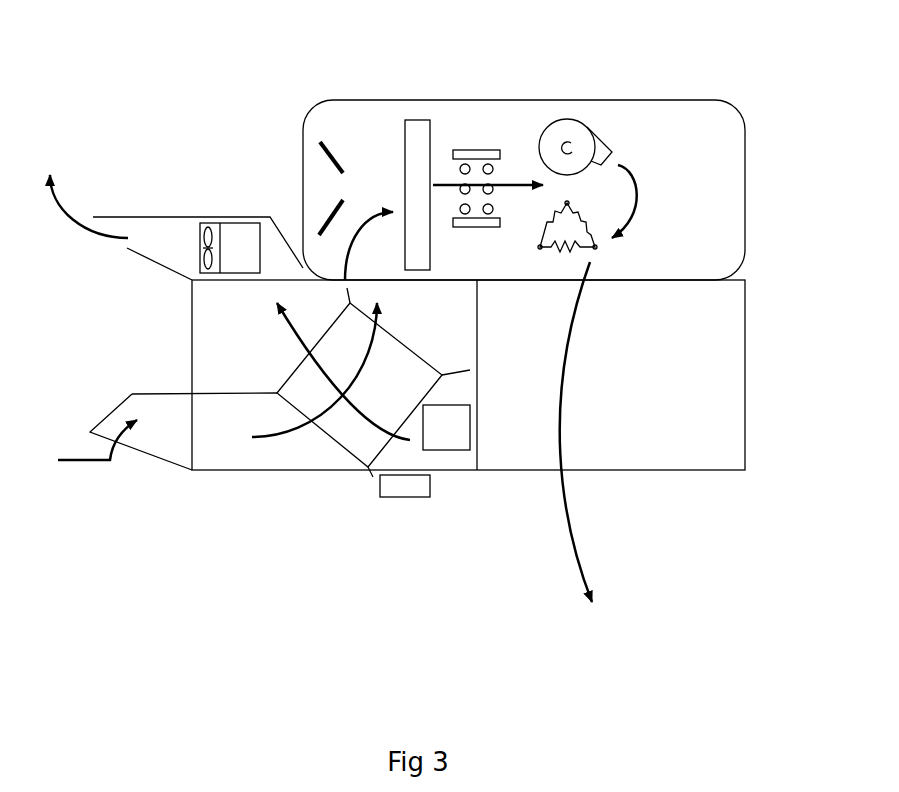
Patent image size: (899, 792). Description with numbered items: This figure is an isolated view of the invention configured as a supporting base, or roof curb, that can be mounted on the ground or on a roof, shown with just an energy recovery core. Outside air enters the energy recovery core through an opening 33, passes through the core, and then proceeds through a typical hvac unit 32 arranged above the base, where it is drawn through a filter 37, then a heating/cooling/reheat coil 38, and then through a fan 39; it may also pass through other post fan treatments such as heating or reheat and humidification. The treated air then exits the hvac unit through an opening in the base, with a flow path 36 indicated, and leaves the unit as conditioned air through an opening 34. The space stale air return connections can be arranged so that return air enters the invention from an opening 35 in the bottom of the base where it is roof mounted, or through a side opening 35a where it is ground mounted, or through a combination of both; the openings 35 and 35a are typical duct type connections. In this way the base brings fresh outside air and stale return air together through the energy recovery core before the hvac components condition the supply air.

The air treatment unit housing 32 is at (546, 190).
The opening 33 is at (125, 432).
The opening 34 is at (581, 457).
The opening 35 is at (408, 500).
The side opening 35a is at (452, 440).
The fan outlet duct 36 is at (176, 226).
The filter 37 is at (405, 110).
The heating/cooling/reheat coil 38 is at (468, 135).
The fan 39 is at (563, 112).